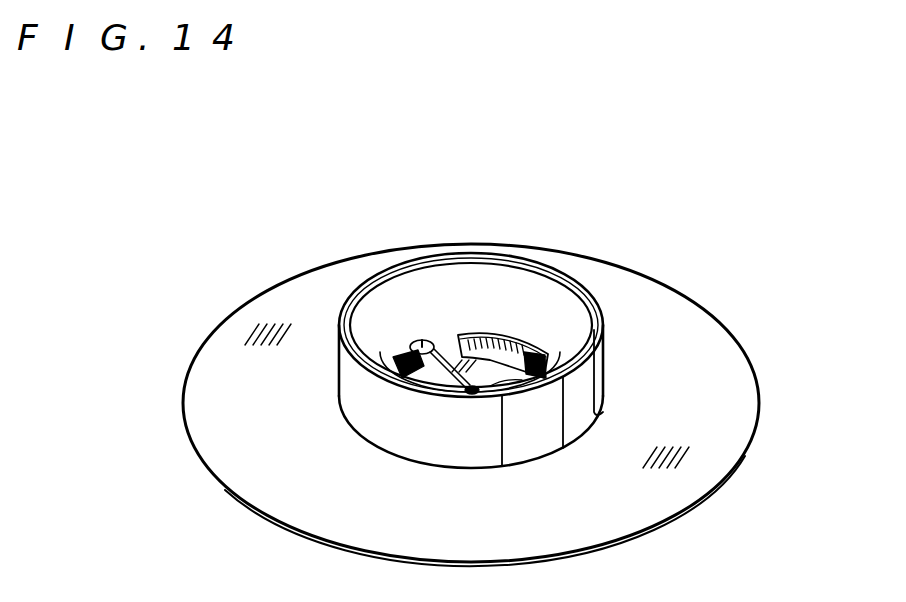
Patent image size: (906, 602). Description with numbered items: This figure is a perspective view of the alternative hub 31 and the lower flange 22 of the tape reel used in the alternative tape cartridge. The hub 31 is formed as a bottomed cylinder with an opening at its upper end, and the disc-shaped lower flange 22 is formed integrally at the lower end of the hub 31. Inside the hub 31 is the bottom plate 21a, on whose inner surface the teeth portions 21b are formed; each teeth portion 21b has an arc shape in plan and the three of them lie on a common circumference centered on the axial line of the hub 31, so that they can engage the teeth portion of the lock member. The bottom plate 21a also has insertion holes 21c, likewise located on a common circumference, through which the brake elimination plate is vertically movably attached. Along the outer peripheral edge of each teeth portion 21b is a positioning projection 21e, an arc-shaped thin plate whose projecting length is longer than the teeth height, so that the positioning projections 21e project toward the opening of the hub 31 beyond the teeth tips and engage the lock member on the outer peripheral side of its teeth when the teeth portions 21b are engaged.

The lower flange 22 is at (752, 356).
The hub 31 is at (621, 387).
The bottom plate 21a is at (526, 387).
The teeth portion 21b is at (497, 337).
The insertion hole 21c is at (423, 340).
The positioning projection 21e is at (396, 358).